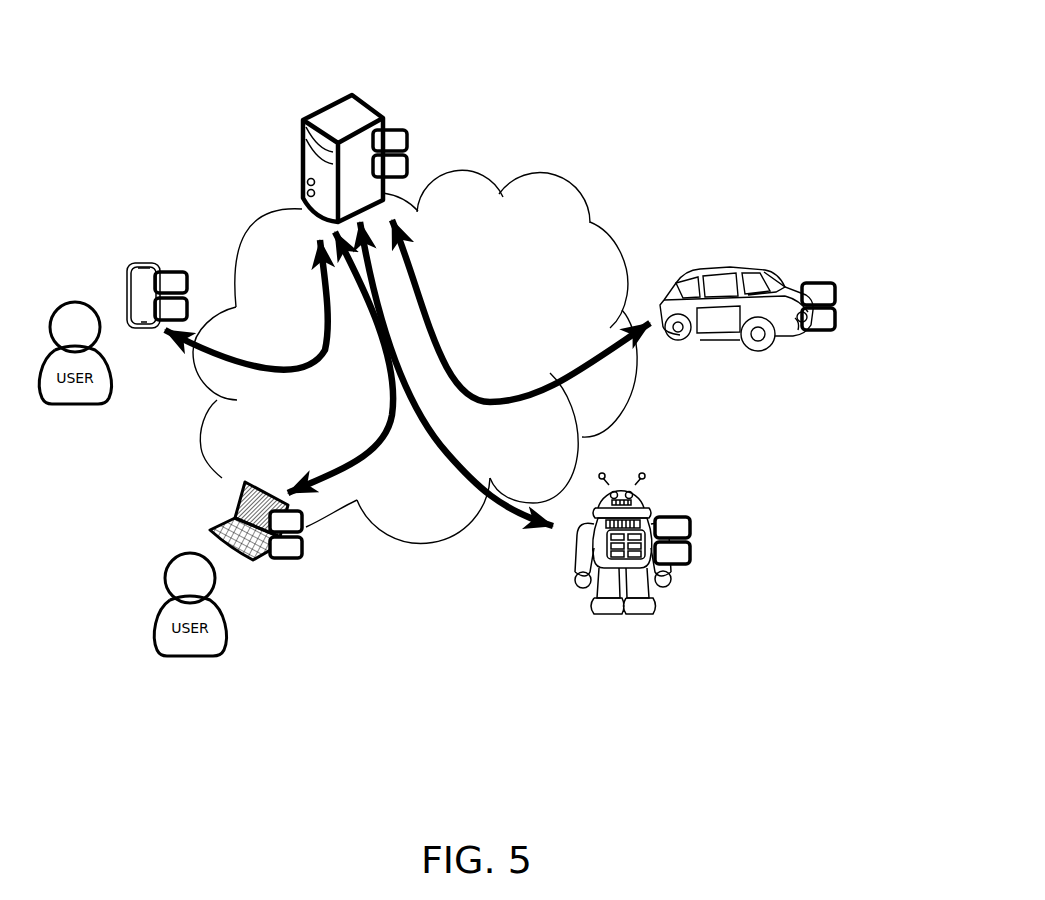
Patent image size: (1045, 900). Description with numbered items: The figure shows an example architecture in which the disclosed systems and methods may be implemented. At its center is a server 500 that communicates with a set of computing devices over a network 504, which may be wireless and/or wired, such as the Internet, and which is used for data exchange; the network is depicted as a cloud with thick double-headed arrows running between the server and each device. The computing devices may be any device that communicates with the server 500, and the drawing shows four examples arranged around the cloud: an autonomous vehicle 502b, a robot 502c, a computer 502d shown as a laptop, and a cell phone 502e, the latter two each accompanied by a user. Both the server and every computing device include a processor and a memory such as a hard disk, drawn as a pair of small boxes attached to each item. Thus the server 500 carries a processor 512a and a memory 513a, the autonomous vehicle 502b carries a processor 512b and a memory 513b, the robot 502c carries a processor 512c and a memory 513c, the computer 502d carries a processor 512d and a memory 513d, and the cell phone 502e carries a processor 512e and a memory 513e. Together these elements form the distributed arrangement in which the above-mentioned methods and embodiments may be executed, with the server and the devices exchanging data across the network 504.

The server 500 is at (352, 90).
The network 504 is at (630, 250).
The autonomous vehicle 502b is at (766, 262).
The robot 502c is at (652, 490).
The computer 502d is at (210, 527).
The cell phone 502e is at (122, 265).
The processor 512a is at (412, 140).
The memory 513a is at (412, 165).
The processor 512b is at (841, 295).
The memory 513b is at (841, 318).
The processor 512c is at (697, 524).
The memory 513c is at (697, 548).
The processor 512d is at (308, 524).
The memory 513d is at (308, 548).
The processor 512e is at (191, 283).
The memory 513e is at (191, 306).